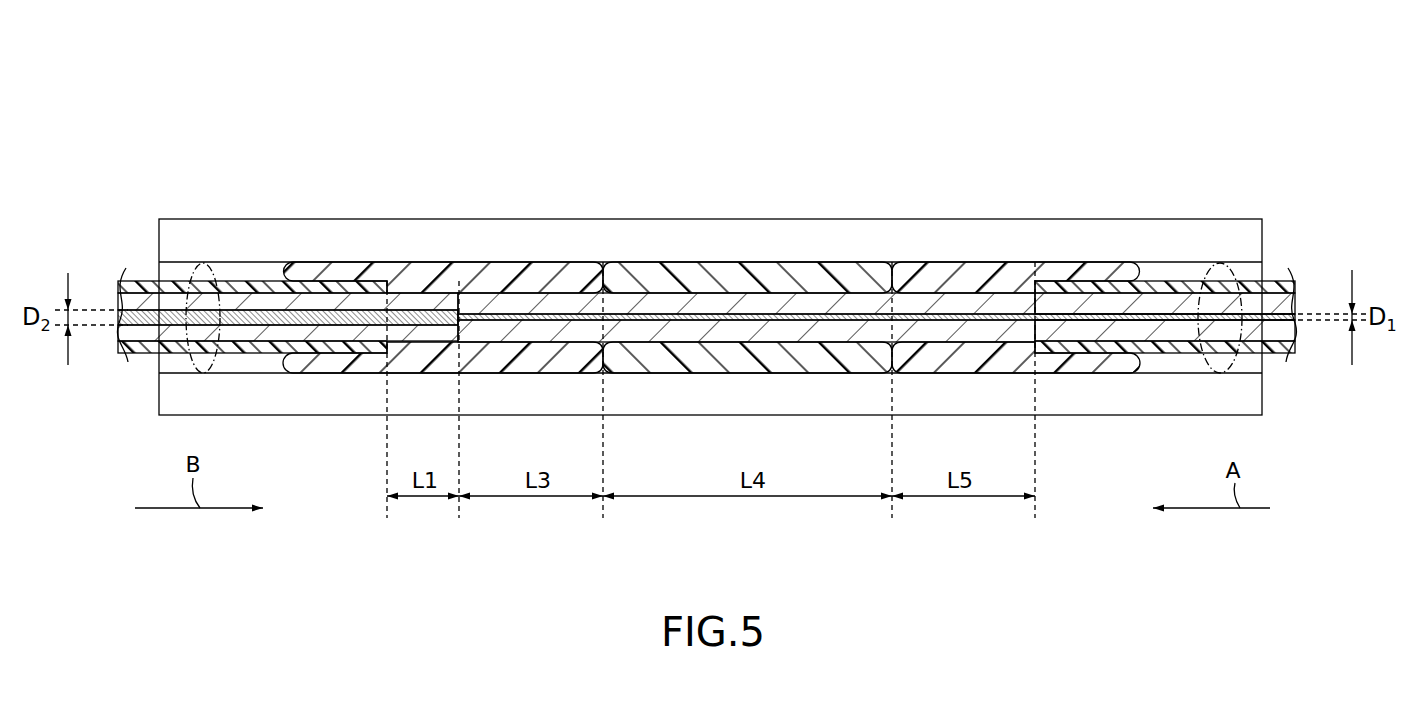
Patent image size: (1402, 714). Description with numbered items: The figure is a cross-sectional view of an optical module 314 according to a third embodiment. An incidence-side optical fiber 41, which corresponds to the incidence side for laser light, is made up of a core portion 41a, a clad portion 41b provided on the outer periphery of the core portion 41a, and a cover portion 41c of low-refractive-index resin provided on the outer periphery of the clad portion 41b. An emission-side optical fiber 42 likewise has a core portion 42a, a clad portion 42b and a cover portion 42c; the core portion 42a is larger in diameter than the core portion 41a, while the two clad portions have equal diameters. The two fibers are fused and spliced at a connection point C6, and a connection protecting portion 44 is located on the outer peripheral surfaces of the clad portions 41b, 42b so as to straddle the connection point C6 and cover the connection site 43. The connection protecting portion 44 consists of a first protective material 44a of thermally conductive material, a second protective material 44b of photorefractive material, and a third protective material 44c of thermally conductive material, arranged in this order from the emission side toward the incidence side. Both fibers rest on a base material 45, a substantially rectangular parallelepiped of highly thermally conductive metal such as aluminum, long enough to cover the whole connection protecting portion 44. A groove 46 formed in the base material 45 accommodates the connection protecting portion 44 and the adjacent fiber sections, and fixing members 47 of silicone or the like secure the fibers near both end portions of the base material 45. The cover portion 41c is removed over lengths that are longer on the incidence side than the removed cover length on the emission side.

The optical module 314 is at (702, 263).
The incidence-side optical fiber 41 is at (1185, 275).
The core portion 41a is at (1258, 310).
The clad portion 41b is at (1170, 307).
The cover portion 41c is at (1155, 265).
The emission-side optical fiber 42 is at (253, 288).
The core portion 42a is at (240, 312).
The clad portion 42b is at (177, 306).
The cover portion 42c is at (147, 273).
The connection site 43 is at (517, 303).
The connection protecting portion 44 is at (711, 254).
The first protective material 44a is at (440, 272).
The second protective material 44b is at (768, 272).
The third protective material 44c is at (1007, 273).
The base material 45 is at (352, 219).
The groove 46 is at (178, 368).
The fixing member 47 is at (217, 362).
The connection point C6 is at (467, 320).